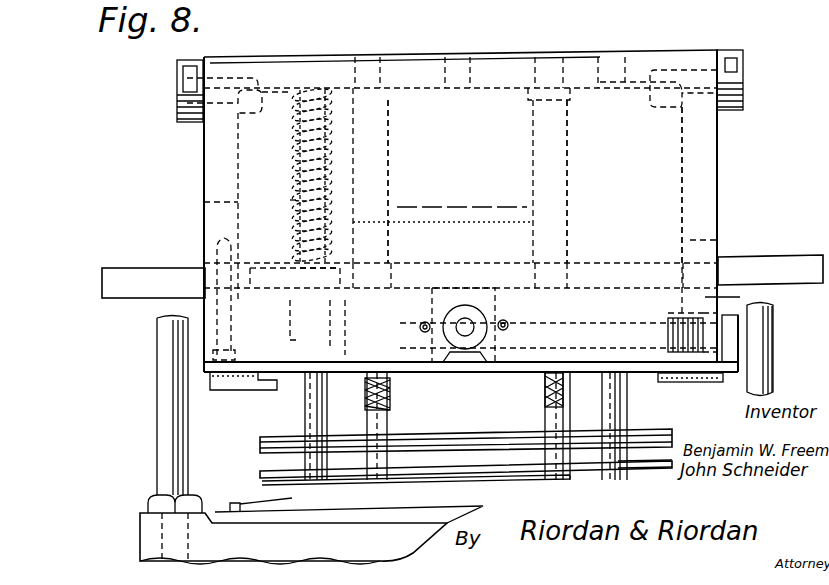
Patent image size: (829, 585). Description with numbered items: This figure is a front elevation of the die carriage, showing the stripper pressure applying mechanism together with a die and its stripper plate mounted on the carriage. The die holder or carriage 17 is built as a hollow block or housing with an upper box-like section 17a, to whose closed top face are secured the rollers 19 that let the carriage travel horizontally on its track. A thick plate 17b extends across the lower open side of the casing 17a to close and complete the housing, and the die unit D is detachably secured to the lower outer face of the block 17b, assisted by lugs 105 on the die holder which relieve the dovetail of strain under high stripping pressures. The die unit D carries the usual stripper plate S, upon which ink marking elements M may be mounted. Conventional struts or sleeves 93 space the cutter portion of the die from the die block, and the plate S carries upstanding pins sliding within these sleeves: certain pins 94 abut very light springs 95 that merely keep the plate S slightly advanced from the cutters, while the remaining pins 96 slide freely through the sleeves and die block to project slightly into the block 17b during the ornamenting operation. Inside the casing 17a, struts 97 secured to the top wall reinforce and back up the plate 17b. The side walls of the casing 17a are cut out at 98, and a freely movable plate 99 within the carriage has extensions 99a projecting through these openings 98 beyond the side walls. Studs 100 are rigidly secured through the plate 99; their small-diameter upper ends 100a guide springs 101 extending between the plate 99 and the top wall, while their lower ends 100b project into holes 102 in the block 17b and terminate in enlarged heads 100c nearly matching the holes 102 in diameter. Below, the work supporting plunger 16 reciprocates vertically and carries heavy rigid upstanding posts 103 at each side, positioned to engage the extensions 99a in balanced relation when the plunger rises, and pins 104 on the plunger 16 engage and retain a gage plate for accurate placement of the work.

The work supporting plunger 16 is at (210, 558).
The die holder or carriage 17 is at (632, 60).
The upper box-like section 17a is at (667, 170).
The thick plate 17b is at (740, 296).
The rollers 19 is at (177, 97).
The struts or sleeves 93 is at (390, 422).
The pins 94 is at (383, 460).
The springs 95 is at (545, 397).
The pins 96 is at (313, 464).
The struts 97 is at (388, 160).
The cut-outs or openings 98 is at (207, 243).
The plate 99 is at (610, 264).
The extensions 99a is at (137, 288).
The studs 100 is at (243, 280).
The stud ends 100a is at (273, 210).
The lower ends of studs 100b is at (273, 322).
The heads 100c is at (337, 355).
The springs 101 is at (292, 170).
The holes 102 is at (360, 326).
The upstanding posts 103 is at (163, 438).
The pins 104 is at (236, 505).
The lugs 105 is at (245, 382).
The die unit D is at (470, 437).
The ink marking elements M is at (538, 478).
The stripper plate S is at (632, 468).